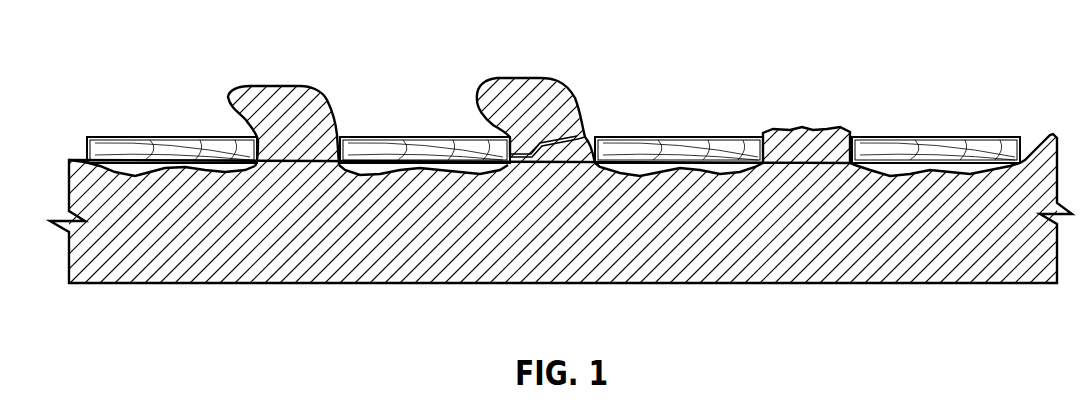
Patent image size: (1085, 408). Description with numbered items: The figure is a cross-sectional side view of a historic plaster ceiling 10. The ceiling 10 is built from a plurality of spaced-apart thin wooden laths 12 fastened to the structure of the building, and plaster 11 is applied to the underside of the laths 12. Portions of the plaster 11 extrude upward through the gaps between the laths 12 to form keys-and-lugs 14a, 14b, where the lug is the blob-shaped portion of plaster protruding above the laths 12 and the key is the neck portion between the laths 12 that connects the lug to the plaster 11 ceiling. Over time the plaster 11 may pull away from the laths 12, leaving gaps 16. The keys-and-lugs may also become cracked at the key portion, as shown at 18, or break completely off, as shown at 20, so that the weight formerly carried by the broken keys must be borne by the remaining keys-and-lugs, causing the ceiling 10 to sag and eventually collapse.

The historic plaster ceiling 10 is at (542, 205).
The plaster 11 is at (747, 257).
The thin wooden laths 12 is at (140, 138).
The key-and-lug 14a is at (270, 93).
The key-and-lug 14b is at (523, 84).
The gaps 16 is at (197, 170).
The cracked key portion 18 is at (543, 166).
The broken-off key 20 is at (812, 116).